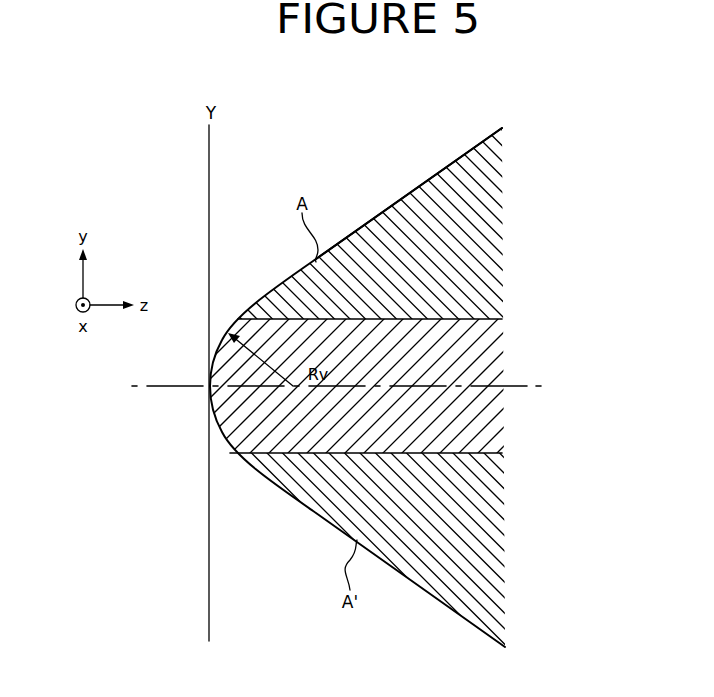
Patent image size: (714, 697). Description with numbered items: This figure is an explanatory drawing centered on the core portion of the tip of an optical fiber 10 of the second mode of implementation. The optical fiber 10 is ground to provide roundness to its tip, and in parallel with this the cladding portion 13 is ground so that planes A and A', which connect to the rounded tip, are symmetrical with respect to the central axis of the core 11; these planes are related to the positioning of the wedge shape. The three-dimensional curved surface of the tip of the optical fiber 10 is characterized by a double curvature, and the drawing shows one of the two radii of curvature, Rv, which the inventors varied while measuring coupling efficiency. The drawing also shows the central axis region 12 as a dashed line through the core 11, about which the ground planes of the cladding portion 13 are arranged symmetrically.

The optical fiber 10 is at (440, 152).
The core 11 is at (490, 333).
The optical axis 12 is at (482, 384).
The cladding portion 13 is at (408, 207).